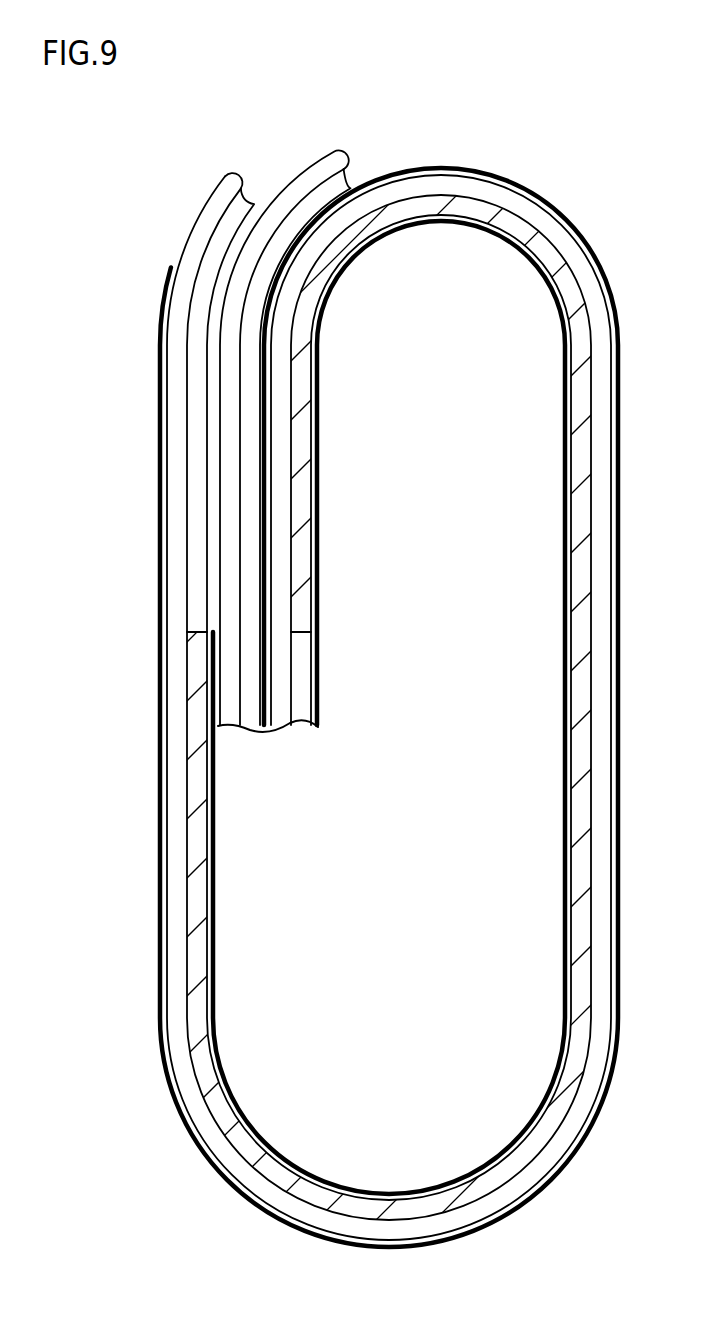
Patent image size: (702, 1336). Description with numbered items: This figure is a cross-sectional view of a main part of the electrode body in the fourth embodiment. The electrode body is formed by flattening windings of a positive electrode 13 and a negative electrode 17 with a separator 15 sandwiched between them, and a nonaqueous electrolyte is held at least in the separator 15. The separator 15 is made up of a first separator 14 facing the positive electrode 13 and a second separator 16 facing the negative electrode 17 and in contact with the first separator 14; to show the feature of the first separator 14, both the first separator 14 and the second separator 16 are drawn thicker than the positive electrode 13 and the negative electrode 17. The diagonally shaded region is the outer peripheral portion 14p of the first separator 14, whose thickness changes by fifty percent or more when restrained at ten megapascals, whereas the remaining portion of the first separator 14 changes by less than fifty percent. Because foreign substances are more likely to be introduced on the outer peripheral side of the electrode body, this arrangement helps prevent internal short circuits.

The positive electrode 13 is at (215, 992).
The first separator 14 is at (197, 497).
The outer peripheral portion of first separator 14p is at (273, 1172).
The separator 15 is at (325, 109).
The second separator 16 is at (175, 450).
The negative electrode 17 is at (297, 1229).